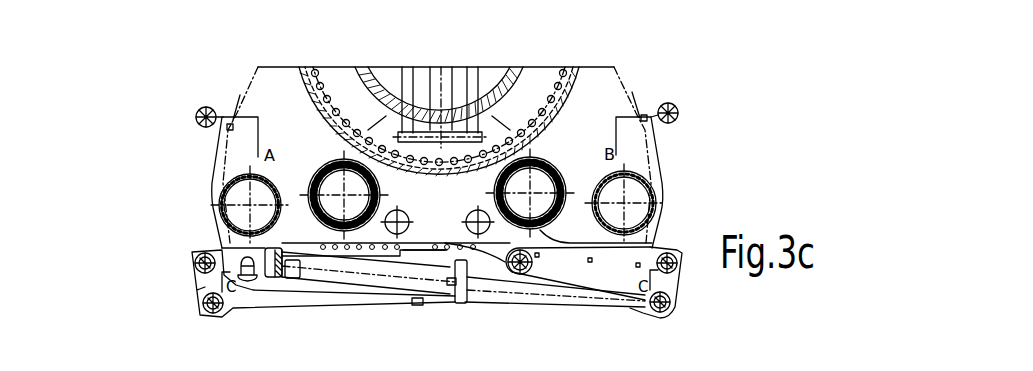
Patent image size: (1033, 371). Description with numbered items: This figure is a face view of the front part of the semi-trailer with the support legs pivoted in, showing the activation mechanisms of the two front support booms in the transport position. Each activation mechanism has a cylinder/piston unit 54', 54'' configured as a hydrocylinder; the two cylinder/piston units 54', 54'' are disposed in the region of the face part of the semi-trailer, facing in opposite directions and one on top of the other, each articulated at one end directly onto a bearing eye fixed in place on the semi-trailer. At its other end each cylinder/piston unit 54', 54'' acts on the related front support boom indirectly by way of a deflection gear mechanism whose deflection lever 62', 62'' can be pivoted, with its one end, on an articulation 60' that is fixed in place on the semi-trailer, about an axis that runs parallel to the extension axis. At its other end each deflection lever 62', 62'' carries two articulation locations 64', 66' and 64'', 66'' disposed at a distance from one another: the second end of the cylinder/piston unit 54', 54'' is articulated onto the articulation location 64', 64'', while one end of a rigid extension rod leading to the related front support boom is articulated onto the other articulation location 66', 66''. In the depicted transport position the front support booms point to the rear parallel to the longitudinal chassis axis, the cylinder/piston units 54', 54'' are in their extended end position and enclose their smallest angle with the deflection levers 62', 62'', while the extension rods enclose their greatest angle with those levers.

The cylinder/piston unit 54' is at (456, 225).
The cylinder/piston unit 54'' is at (360, 298).
The articulation 60' is at (550, 304).
The deflection lever 62' is at (594, 298).
The deflection lever 62'' is at (323, 299).
The articulation location 64' is at (702, 296).
The articulation location 64'' is at (160, 310).
The articulation location 66' is at (695, 217).
The articulation location 66'' is at (159, 235).